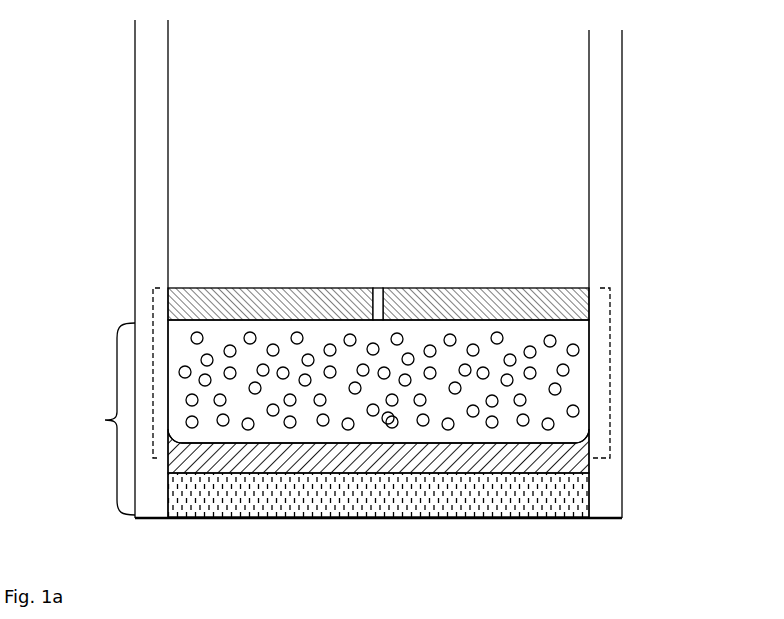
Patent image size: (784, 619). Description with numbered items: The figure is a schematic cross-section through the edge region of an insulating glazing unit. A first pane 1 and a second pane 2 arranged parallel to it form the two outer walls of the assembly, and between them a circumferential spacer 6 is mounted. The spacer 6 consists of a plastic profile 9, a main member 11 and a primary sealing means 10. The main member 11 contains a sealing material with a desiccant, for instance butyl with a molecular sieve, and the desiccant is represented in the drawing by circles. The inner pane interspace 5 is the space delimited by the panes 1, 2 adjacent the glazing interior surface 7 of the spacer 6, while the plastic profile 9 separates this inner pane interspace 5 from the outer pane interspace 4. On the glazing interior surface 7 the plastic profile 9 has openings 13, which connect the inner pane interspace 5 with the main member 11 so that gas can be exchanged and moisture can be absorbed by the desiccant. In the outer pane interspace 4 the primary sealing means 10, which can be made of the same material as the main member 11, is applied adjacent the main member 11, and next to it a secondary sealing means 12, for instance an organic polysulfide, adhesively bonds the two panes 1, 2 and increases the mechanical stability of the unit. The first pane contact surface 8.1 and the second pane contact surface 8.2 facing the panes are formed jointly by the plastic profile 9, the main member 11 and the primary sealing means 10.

The first pane 1 is at (147, 122).
The second pane 2 is at (605, 133).
The outer pane interspace 4 is at (105, 420).
The inner pane interspace 5 is at (513, 75).
The spacer 6 is at (591, 288).
The glazing interior surface 7 is at (224, 288).
The first pane contact surface 8.1 is at (153, 373).
The second pane contact surface 8.2 is at (612, 373).
The plastic profile 9 is at (288, 302).
The primary sealing means 10 is at (586, 460).
The main member 11 is at (573, 389).
The secondary sealing means 12 is at (573, 500).
The openings 13 is at (378, 297).